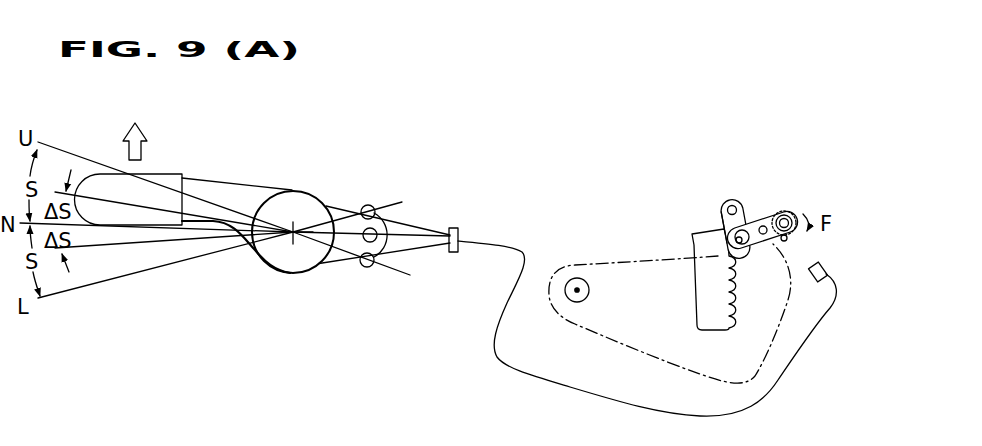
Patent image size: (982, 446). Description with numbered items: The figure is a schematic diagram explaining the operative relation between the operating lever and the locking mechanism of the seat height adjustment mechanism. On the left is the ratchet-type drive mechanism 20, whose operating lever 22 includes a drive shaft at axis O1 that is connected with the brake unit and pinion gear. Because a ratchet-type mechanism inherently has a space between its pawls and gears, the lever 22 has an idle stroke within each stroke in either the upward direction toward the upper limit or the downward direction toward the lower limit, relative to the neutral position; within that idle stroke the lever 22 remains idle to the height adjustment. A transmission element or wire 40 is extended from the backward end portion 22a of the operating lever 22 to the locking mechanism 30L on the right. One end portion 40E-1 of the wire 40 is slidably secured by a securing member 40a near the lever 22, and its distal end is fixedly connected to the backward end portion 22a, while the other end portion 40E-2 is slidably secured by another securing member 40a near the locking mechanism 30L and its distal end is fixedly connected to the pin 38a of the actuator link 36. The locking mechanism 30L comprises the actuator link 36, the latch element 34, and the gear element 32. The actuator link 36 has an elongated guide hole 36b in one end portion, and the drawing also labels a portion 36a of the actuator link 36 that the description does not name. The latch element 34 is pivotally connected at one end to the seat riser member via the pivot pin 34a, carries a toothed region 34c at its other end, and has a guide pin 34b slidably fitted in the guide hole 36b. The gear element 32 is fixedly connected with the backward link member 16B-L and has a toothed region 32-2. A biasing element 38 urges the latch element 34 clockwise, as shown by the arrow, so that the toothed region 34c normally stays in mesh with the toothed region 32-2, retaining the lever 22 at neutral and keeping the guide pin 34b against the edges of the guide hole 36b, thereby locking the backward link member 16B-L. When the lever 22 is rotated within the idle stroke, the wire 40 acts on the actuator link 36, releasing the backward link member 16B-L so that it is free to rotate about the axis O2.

The ratchet-type drive mechanism 20 is at (251, 269).
The operating lever 22 is at (172, 176).
The backward end portion of the operating lever 22a is at (352, 244).
The one end portion of the wire 40E-1 is at (369, 204).
The securing member 40a is at (458, 227).
The transmission element (wire) 40 is at (492, 347).
The left-side backward link member 16B-L is at (633, 348).
The gear element 32 is at (694, 244).
The toothed region of the gear element 32-2 is at (727, 287).
The latch element 34 is at (722, 218).
The pivot pin 34a is at (726, 200).
The toothed region of the latch element 34c is at (719, 226).
The guide pin 34b is at (745, 252).
The actuator link 36 is at (761, 216).
The operating lever pivot 36a is at (788, 212).
The elongated guide hole 36b is at (779, 239).
The biasing element 38 is at (793, 212).
The pin of the actuator link 38a is at (788, 240).
The another end portion of the wire 40E-2 is at (758, 226).
The locking mechanism (left) 30L is at (782, 178).
The drive shaft axis O1 is at (297, 212).
The axis of the backward link member O2 is at (577, 278).